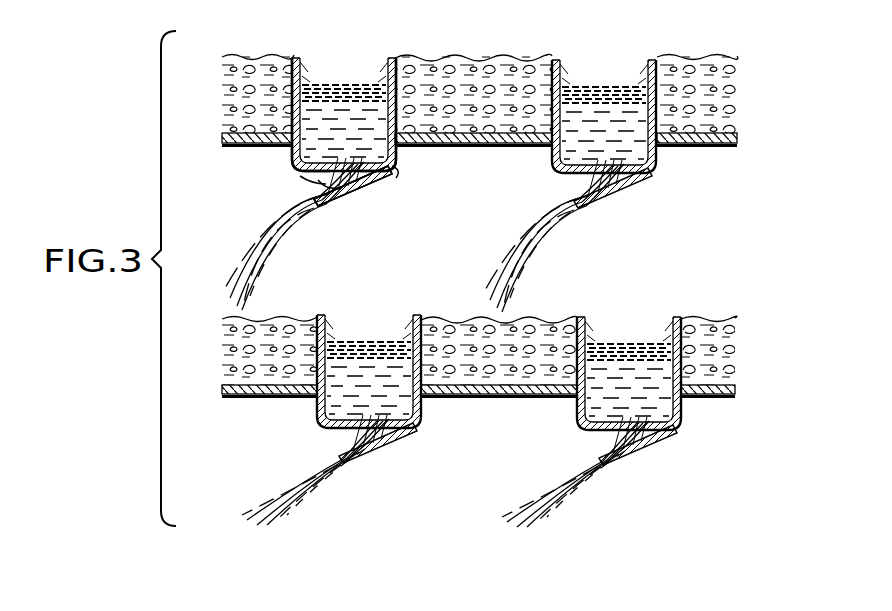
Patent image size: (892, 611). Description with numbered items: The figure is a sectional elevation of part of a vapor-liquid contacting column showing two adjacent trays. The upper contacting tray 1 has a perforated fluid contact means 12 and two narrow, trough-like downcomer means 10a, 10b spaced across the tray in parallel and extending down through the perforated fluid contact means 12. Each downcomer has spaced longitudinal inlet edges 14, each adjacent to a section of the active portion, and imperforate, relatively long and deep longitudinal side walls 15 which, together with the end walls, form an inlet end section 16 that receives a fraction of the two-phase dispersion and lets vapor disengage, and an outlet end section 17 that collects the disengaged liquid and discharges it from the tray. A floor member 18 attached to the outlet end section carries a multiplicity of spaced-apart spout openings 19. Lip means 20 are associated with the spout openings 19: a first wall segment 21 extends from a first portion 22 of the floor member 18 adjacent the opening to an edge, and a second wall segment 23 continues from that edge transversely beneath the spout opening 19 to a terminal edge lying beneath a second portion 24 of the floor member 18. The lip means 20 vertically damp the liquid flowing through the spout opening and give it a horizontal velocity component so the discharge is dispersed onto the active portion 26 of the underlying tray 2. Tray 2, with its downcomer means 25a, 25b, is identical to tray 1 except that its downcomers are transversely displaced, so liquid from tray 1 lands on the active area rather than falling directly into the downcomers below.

The upper contacting tray 1 is at (515, 152).
The underlying tray 2 is at (546, 404).
The downcomer means 10a is at (348, 60).
The downcomer means 10b is at (624, 50).
The perforated fluid contact means 12 is at (702, 146).
The longitudinal inlet edges 14 is at (396, 58).
The longitudinal side walls 15 is at (396, 112).
The inlet end section 16 is at (284, 59).
The outlet end section 17 is at (285, 162).
The floor member 18 is at (396, 152).
The spout openings 19 is at (326, 176).
The lip means 20 is at (360, 211).
The first wall segment 21 is at (370, 186).
The first portion of the downcomer floor member 22 is at (400, 180).
The second wall segment 23 is at (329, 207).
The second portion of the downcomer floor member 24 is at (303, 172).
The downcomer means 25a is at (376, 309).
The downcomer means 25b is at (640, 308).
The active portion 26 is at (716, 396).